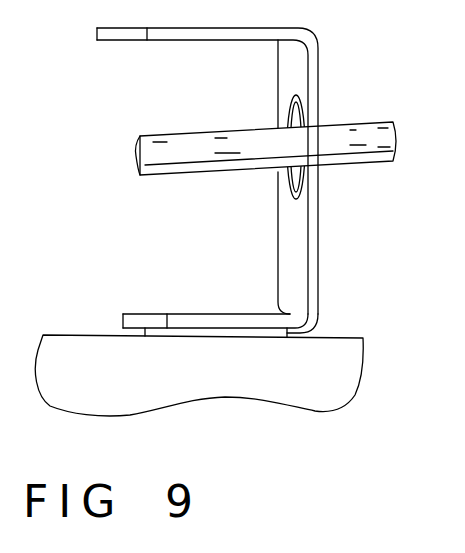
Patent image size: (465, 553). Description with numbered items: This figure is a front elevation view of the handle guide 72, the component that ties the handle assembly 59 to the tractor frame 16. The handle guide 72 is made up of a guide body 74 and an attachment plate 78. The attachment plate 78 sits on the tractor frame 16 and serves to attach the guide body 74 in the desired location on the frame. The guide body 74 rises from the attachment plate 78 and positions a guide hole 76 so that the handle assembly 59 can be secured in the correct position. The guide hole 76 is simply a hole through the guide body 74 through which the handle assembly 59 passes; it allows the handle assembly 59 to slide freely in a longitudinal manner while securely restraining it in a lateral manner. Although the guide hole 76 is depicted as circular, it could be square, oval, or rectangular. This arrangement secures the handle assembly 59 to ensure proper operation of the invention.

The tractor frame 16 is at (85, 335).
The handle assembly 59 is at (351, 121).
The handle guide 72 is at (197, 203).
The guide body 74 is at (146, 42).
The guide hole 76 is at (302, 178).
The attachment plate 78 is at (288, 333).